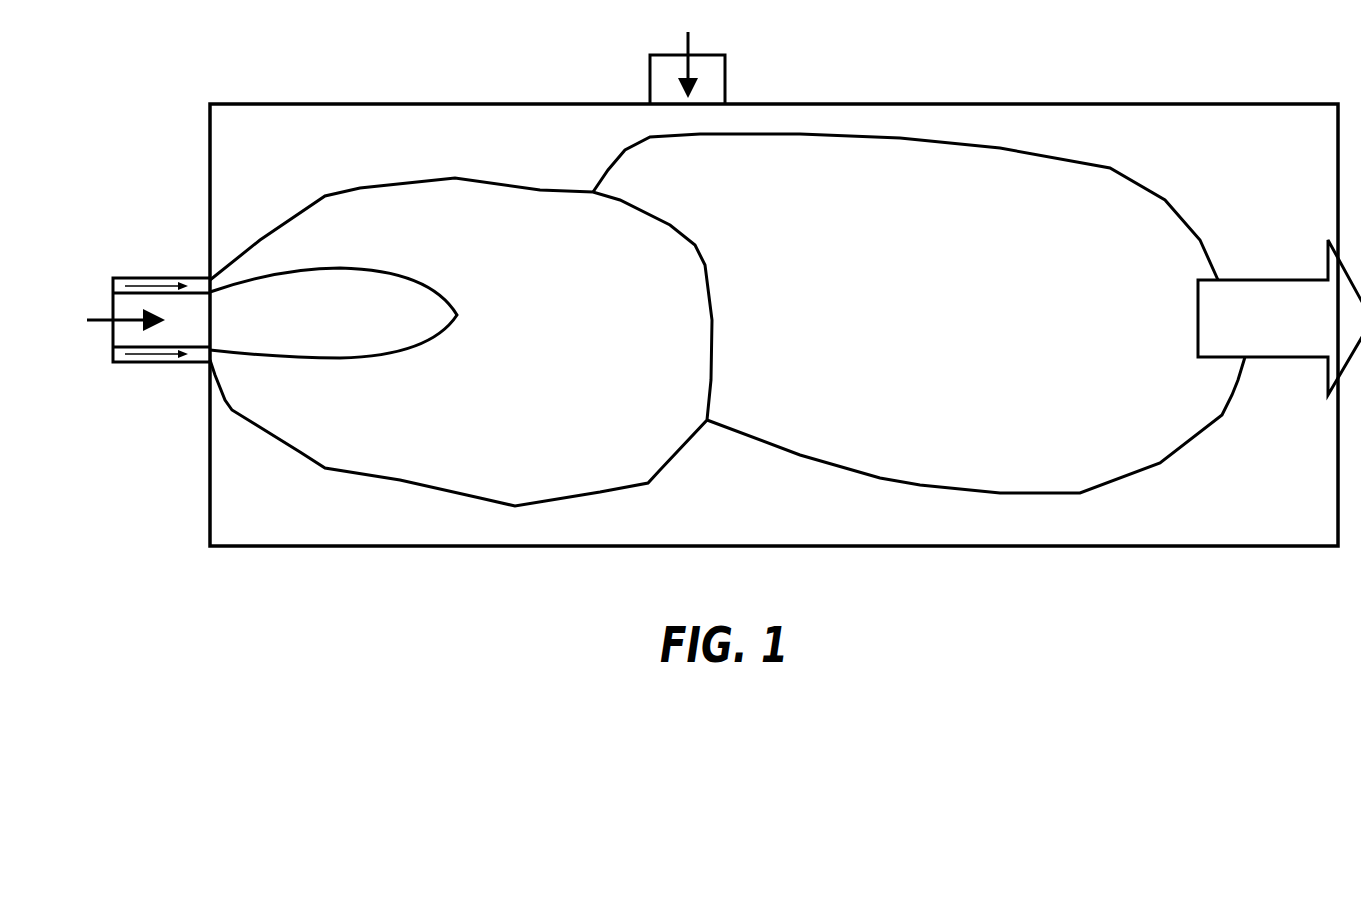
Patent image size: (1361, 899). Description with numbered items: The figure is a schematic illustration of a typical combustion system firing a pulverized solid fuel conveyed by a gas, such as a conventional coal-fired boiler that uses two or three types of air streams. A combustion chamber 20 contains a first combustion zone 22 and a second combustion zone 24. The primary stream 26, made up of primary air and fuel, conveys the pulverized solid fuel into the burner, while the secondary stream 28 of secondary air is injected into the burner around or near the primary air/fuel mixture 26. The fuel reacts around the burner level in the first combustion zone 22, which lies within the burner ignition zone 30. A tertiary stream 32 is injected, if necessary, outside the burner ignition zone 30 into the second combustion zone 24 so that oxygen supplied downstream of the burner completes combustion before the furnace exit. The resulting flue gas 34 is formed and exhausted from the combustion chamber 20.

The combustion chamber 20 is at (929, 528).
The first combustion zone 22 is at (349, 328).
The second combustion zone 24 is at (943, 312).
The primary stream 26 is at (94, 323).
The secondary stream 28 is at (157, 280).
The burner ignition zone 30 is at (564, 367).
The tertiary stream 32 is at (690, 42).
The flue gas 34 is at (1304, 332).